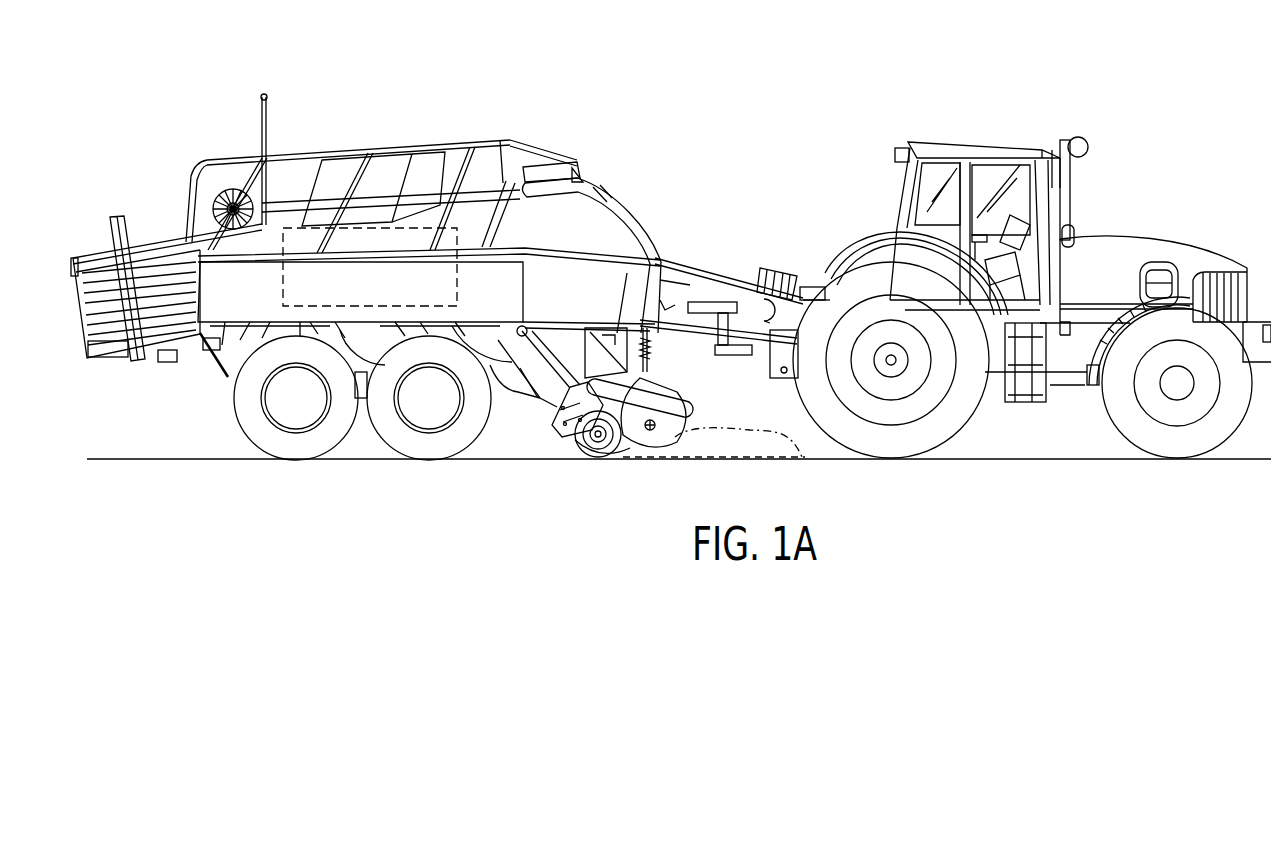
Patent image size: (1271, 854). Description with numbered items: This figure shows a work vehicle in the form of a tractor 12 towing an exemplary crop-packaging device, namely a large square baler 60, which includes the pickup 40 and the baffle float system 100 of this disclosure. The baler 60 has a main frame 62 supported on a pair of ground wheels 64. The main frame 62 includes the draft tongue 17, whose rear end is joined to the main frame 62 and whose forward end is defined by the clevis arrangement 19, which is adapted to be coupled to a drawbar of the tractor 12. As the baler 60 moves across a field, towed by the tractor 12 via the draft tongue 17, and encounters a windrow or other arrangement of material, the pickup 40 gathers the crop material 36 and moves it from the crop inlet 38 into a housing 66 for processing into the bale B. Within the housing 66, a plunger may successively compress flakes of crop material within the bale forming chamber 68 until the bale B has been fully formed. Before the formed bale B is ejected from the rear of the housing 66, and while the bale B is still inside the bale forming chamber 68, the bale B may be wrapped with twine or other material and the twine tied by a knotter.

The tractor 12 is at (1170, 242).
The draft tongue 17 is at (670, 272).
The clevis arrangement 19 is at (783, 270).
The crop material 36 is at (742, 462).
The crop inlet 38 is at (640, 447).
The pickup 40 is at (585, 468).
The large square baler 60 is at (199, 105).
The main frame 62 is at (537, 402).
The ground wheels 64 is at (252, 428).
The housing 66 is at (577, 222).
The bale forming chamber 68 is at (383, 226).
The baffle float system 100 is at (660, 378).
The bale B is at (105, 357).